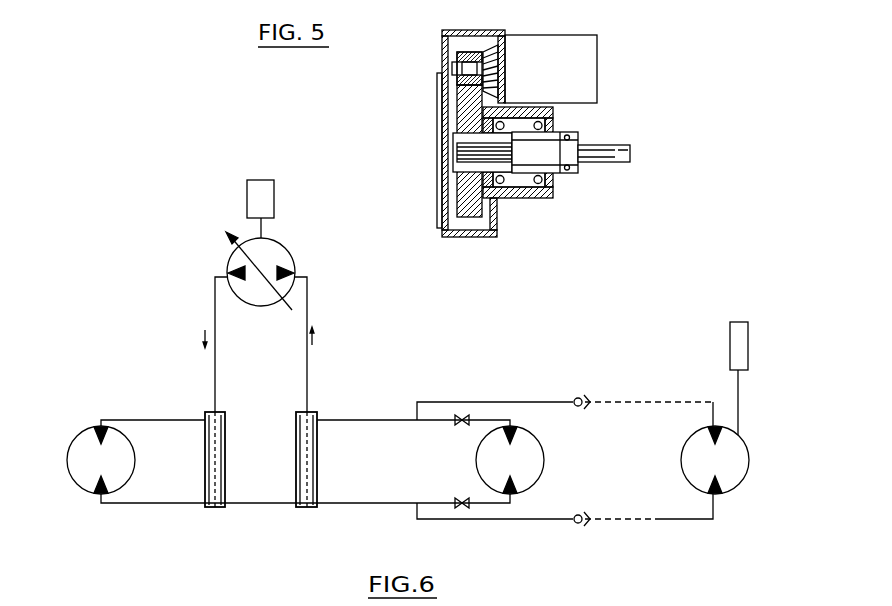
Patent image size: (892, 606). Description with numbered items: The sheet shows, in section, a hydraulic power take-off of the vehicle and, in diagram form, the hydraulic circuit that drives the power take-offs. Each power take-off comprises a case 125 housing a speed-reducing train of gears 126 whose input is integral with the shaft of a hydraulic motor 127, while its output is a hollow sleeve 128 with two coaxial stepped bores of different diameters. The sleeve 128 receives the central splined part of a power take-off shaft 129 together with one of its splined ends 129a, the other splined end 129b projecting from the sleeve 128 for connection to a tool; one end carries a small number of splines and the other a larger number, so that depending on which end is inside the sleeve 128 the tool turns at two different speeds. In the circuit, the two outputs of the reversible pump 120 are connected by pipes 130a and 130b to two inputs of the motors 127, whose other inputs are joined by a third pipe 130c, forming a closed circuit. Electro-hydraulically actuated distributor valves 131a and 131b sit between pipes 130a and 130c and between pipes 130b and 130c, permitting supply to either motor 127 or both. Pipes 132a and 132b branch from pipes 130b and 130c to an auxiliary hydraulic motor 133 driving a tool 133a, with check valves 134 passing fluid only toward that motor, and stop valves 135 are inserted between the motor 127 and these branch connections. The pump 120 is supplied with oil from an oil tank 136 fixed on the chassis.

In FIG. 6, the reversible pump 120 is at (240, 258).
In FIG. 5, the case 125 is at (442, 45).
In FIG. 5, the speed-reducing train of gears 126 is at (457, 123).
In FIG. 5, the hydraulic motor 127 is at (578, 68).
In FIG. 6, the hydraulic motor 127 is at (83, 462).
In FIG. 5, the hollow sleeve 128 is at (560, 128).
In FIG. 5, the power take-off shaft 129 is at (555, 160).
In FIG. 5, the splined end 129a is at (467, 155).
In FIG. 5, the splined end 129b is at (630, 152).
In FIG. 6, the pipe 130a is at (215, 372).
In FIG. 6, the pipe 130b is at (307, 372).
In FIG. 6, the third pipe 130c is at (253, 503).
In FIG. 6, the hydraulic distributor valve 131a is at (205, 507).
In FIG. 6, the hydraulic distributor valve 131b is at (317, 507).
In FIG. 6, the pipe 132a is at (535, 402).
In FIG. 6, the pipe 132b is at (533, 520).
In FIG. 6, the auxiliary hydraulic motor 133 is at (727, 485).
In FIG. 6, the tool 133a is at (738, 344).
In FIG. 6, the check valve 134 is at (581, 397).
In FIG. 6, the stop valve 135 is at (462, 412).
In FIG. 6, the oil tank 136 is at (257, 201).